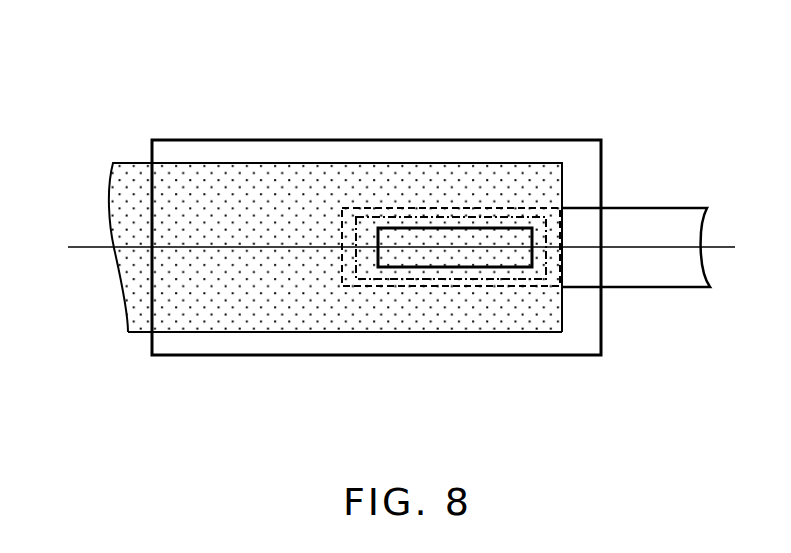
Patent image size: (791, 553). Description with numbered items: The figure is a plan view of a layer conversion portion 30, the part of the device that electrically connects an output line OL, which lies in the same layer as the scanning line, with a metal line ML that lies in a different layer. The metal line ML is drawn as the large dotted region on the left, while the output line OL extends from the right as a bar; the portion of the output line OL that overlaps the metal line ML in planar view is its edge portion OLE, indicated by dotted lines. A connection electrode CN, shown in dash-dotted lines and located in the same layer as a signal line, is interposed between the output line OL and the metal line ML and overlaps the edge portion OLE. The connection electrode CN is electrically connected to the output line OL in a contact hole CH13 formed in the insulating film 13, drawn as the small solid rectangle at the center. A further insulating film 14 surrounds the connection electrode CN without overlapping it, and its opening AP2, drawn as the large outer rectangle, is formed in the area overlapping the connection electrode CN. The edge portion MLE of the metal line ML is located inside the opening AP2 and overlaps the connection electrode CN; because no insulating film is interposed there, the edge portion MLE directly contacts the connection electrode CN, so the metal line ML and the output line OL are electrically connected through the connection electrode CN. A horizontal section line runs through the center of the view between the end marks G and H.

The layer conversion portion 30 is at (410, 103).
The opening AP2 is at (568, 140).
The insulating film 14 is at (376, 247).
The metal line ML is at (142, 334).
The edge portion of the metal line MLE is at (415, 333).
The output line OL is at (582, 288).
The edge portion of the output line OLE is at (497, 207).
The connection electrode CN is at (357, 280).
The contact hole CH13 is at (487, 268).
The insulating film 13 is at (455, 247).
The section line end G is at (217, 248).
The section line end H is at (576, 248).